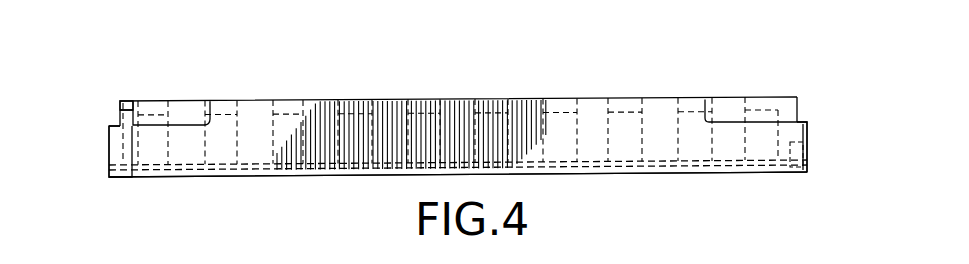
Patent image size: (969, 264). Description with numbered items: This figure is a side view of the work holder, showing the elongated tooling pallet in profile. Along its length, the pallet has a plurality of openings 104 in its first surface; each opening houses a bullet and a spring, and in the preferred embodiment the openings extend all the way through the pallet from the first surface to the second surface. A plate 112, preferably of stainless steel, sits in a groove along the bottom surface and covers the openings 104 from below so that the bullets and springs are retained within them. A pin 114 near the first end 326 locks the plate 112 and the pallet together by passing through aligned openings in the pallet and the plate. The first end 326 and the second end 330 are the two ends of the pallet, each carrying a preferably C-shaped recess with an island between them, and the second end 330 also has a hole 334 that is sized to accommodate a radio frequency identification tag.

The openings 104 is at (420, 100).
The plate 112 is at (221, 171).
The pin 114 is at (128, 105).
The first end 326 is at (109, 142).
The second end 330 is at (807, 127).
The hole 334 is at (799, 158).